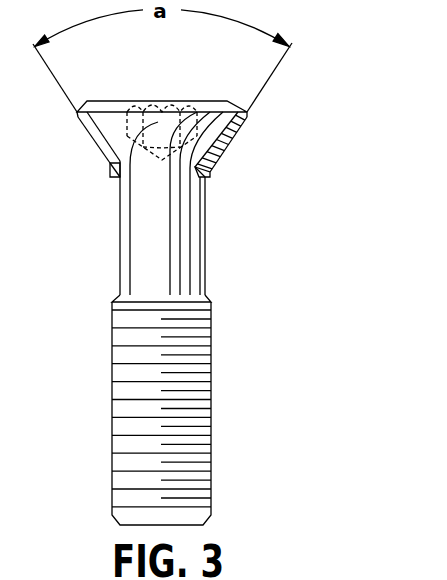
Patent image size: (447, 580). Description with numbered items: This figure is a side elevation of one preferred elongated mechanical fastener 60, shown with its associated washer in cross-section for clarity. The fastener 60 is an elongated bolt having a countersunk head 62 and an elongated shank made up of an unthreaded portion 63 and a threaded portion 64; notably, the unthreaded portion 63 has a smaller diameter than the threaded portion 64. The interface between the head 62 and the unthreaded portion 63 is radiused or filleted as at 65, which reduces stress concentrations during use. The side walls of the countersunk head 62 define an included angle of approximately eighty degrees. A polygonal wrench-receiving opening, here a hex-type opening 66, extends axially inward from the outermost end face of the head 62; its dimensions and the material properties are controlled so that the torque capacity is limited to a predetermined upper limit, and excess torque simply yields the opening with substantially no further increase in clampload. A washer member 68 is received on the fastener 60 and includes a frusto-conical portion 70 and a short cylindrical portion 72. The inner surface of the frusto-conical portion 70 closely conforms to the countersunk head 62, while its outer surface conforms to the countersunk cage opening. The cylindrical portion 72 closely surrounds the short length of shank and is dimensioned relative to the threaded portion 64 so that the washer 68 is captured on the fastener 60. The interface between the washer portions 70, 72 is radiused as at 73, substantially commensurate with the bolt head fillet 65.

The fastener 60 is at (216, 247).
The countersunk head 62 is at (114, 124).
The unthreaded portion 63 is at (142, 246).
The threaded portion 64 is at (118, 323).
The fillet 65 is at (211, 178).
The hex-type opening 66 is at (158, 122).
The washer member 68 is at (234, 157).
The frusto-conical portion 70 is at (240, 131).
The cylindrical portion 72 is at (112, 174).
The radiused interface 73 is at (110, 164).